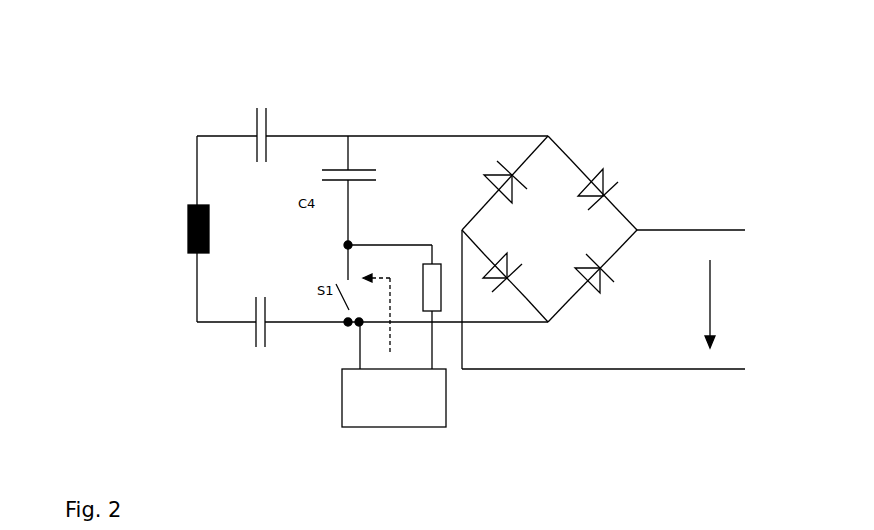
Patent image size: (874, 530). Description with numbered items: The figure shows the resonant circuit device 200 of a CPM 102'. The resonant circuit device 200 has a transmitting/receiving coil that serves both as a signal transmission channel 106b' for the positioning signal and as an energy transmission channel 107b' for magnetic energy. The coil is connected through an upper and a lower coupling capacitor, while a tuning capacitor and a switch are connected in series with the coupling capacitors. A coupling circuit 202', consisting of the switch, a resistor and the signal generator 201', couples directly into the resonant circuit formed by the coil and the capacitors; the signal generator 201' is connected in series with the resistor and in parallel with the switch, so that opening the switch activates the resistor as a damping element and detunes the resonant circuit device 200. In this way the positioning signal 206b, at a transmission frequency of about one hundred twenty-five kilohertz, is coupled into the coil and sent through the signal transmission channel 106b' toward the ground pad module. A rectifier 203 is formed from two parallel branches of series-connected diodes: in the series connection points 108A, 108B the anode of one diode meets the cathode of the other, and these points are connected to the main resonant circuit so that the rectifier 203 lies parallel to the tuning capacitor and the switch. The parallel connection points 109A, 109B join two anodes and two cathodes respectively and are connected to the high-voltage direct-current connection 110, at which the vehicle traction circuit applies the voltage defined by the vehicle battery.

The signal transmission channel 106b' is at (181, 230).
The energy transmission channel 107b' is at (272, 230).
The first parallel connection point 109A is at (462, 230).
The second parallel connection point 109B is at (637, 228).
The series connection point 108A is at (552, 140).
The series connection point 108B is at (548, 322).
The resonant circuit device 200 is at (581, 193).
The rectifier 203 is at (598, 137).
The CPM 102' is at (646, 193).
The HVDC connection 110 is at (753, 272).
The coupling circuit 202' is at (403, 276).
The positioning signal 206b is at (393, 314).
The signal generator 201' is at (431, 435).